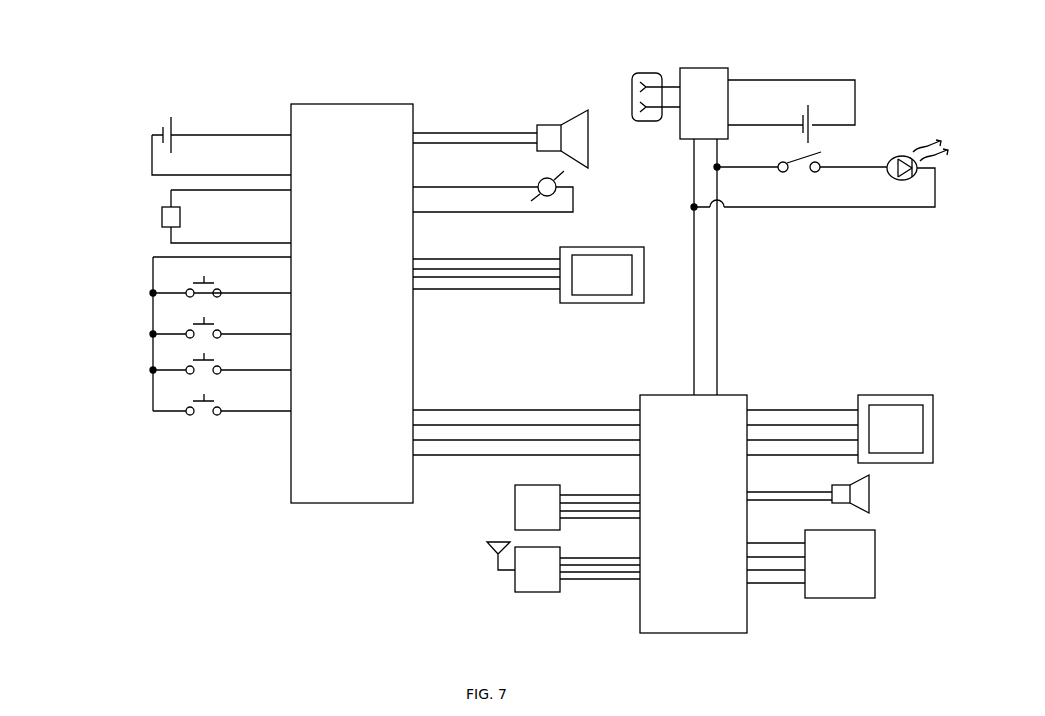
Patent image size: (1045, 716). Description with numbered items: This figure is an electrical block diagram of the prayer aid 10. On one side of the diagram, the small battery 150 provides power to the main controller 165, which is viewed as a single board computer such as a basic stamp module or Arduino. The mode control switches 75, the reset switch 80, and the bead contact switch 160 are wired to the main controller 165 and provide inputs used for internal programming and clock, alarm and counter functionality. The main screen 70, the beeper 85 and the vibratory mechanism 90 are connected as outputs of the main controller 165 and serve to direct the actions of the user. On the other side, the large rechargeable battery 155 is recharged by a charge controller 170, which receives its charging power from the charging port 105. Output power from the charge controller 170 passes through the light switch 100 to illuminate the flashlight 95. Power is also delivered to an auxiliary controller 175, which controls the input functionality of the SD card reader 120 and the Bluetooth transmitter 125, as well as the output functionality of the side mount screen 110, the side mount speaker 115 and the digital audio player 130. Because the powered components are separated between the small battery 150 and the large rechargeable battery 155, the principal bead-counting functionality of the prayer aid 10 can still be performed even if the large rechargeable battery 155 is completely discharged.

The prayer aid 10 is at (86, 136).
The main screen 70 is at (560, 280).
The mode control switches 75 is at (190, 325).
The reset switch 80 is at (190, 285).
The beeper 85 is at (580, 112).
The vibratory mechanism 90 is at (560, 182).
The flashlight 95 is at (902, 162).
The light switch 100 is at (801, 170).
The charging port 105 is at (638, 70).
The side mount screen 110 is at (898, 415).
The side mount speaker 115 is at (872, 487).
The SD card reader 120 is at (530, 512).
The Bluetooth transmitter 125 is at (530, 575).
The digital audio player 130 is at (860, 550).
The small battery 150 is at (163, 127).
The large rechargeable battery 155 is at (812, 118).
The bead contact switch 160 is at (168, 219).
The main controller 165 is at (338, 126).
The charge controller 170 is at (712, 85).
The auxiliary controller 175 is at (678, 612).